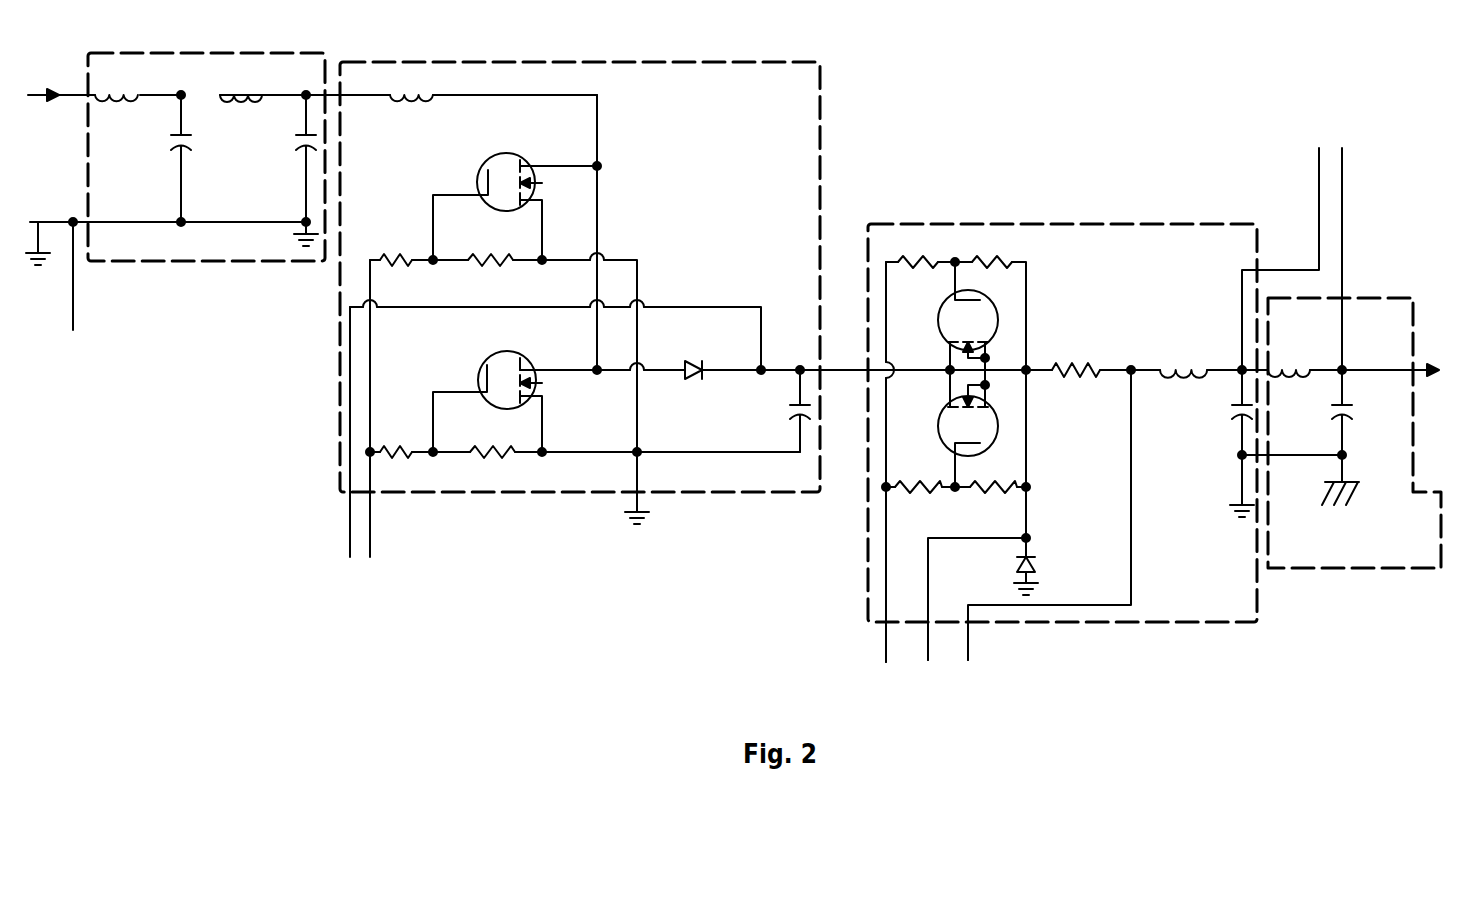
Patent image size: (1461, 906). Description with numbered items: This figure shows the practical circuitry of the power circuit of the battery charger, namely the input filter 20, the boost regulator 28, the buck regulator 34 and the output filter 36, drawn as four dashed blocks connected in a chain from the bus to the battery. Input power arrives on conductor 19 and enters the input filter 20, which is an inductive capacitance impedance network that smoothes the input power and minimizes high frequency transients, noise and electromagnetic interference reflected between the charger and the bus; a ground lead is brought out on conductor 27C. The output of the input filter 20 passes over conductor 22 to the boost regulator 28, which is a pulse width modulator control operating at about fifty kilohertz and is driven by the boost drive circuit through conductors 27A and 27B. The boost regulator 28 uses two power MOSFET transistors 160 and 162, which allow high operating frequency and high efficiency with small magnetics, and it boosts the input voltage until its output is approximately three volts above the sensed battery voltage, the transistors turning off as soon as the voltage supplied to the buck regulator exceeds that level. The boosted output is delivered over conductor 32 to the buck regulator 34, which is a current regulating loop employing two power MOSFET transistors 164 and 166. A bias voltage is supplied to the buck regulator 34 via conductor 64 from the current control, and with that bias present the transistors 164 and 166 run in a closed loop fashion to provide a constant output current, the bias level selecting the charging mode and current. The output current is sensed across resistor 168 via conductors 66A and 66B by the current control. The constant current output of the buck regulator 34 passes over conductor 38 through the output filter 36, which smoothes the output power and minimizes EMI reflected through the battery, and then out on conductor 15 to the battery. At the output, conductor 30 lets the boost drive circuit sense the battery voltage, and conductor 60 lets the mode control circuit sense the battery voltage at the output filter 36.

The conductor 15 is at (1420, 377).
The conductor 19 is at (78, 95).
The input filter 20 is at (180, 261).
The conductor 22 is at (334, 95).
The conductor 27A is at (349, 514).
The conductor 27B is at (368, 514).
The conductor 27C is at (73, 268).
The boost regulator 28 is at (503, 62).
The conductor 30 is at (1319, 208).
The boost regulator output line 32 is at (832, 372).
The buck regulator 34 is at (1163, 224).
The output filter 36 is at (1297, 568).
The conductor 38 is at (1262, 370).
The conductor 60 is at (1342, 215).
The conductor 64 is at (886, 653).
The conductor 66A is at (928, 660).
The conductor 66B is at (968, 660).
The power MOSFET transistor 160 is at (530, 156).
The power MOSFET transistor 162 is at (530, 355).
The power MOSFET transistor 164 is at (938, 332).
The power MOSFET transistor 166 is at (940, 438).
The resistor 168 is at (1068, 378).